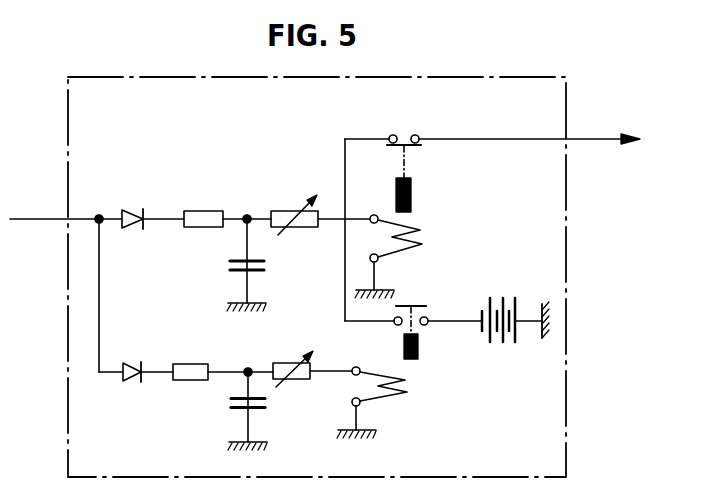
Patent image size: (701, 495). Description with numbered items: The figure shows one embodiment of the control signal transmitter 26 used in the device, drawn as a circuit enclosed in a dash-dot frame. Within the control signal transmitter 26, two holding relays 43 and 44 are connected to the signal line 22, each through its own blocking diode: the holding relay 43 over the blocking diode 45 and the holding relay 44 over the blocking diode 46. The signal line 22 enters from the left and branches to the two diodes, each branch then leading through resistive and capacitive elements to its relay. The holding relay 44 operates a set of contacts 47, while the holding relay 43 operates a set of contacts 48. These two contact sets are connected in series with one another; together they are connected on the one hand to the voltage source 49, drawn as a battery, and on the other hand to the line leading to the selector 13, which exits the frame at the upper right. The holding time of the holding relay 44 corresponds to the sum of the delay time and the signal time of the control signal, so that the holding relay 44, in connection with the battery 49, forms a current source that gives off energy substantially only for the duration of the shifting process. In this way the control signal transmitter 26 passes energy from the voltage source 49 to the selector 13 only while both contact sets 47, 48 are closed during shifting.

The selector 13 is at (547, 142).
The signal line 22 is at (38, 217).
The control signal transmitter 26 is at (568, 431).
The holding relay 43 is at (466, 234).
The holding relay 44 is at (450, 414).
The blocking diode 45 is at (118, 209).
The blocking diode 46 is at (135, 381).
The set of contacts 47 is at (425, 313).
The set of contacts 48 is at (403, 134).
The voltage source 49 is at (508, 345).